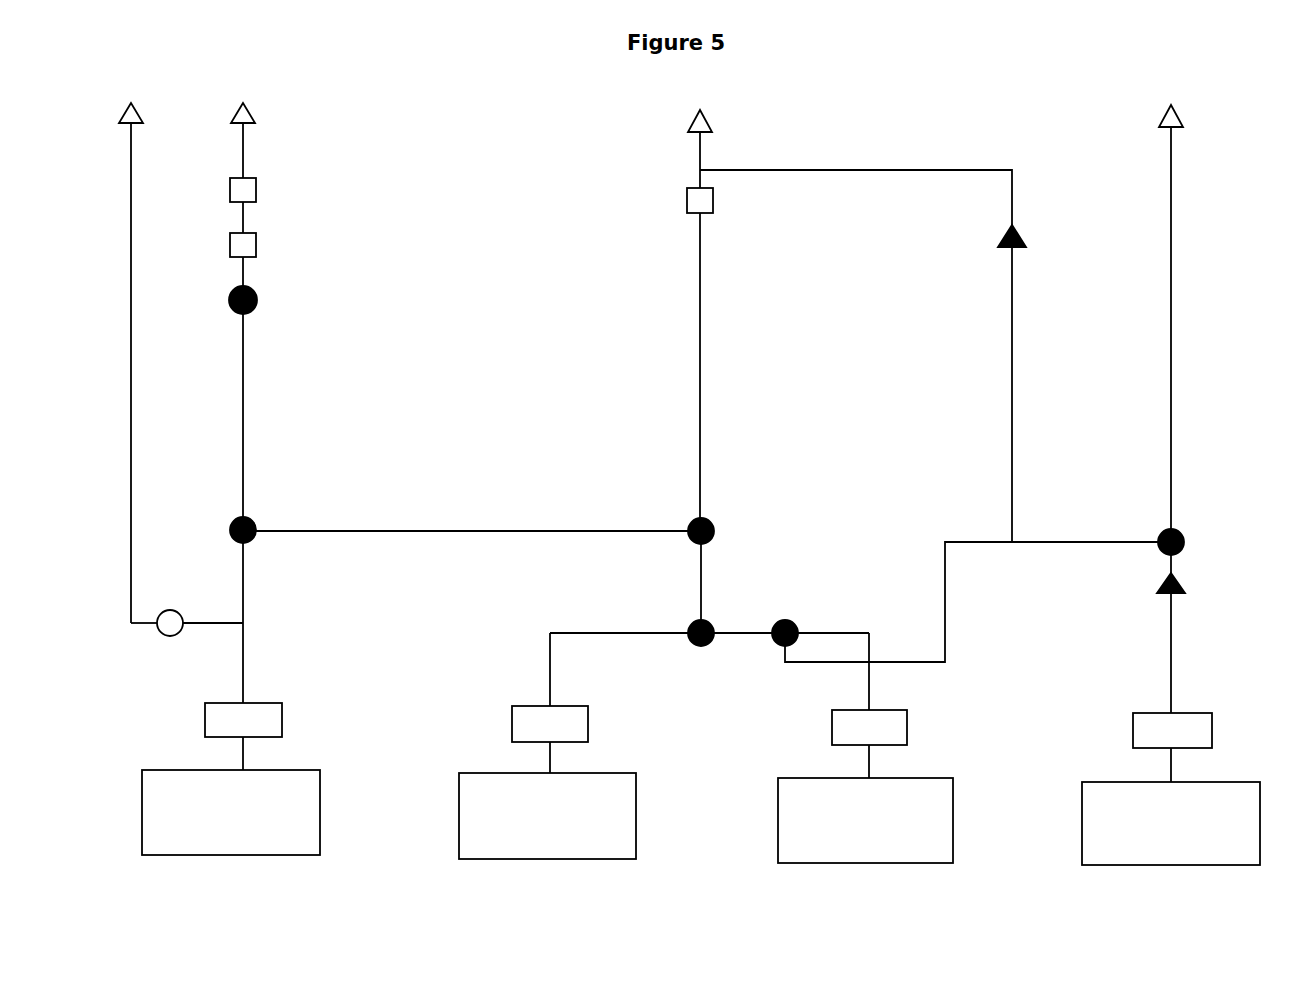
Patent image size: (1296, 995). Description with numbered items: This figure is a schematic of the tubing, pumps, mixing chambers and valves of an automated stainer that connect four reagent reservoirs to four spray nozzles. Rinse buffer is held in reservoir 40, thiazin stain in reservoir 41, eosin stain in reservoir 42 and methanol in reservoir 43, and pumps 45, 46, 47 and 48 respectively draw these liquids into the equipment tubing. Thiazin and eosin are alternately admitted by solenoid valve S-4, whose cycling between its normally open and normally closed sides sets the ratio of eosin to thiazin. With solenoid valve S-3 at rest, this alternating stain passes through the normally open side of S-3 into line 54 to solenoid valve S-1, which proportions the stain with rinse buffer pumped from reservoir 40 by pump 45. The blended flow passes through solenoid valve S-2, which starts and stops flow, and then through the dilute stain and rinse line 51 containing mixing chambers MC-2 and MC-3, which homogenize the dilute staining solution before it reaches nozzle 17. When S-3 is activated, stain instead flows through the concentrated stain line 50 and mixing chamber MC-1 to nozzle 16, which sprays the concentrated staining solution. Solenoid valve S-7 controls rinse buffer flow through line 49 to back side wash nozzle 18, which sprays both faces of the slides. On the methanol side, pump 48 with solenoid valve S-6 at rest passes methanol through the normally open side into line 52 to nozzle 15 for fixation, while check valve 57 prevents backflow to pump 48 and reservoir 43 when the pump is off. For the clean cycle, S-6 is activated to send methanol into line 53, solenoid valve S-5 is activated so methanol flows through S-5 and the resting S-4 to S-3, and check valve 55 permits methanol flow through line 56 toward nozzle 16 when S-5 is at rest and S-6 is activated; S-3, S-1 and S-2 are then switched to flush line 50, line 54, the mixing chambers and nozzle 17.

The methanol nozzle 15 is at (1170, 100).
The concentrated stain nozzle 16 is at (700, 105).
The dilute stain nozzle 17 is at (242, 97).
The back side wash nozzle 18 is at (130, 97).
The rinse buffer reservoir 40 is at (231, 796).
The thiazin stain reservoir 41 is at (547, 800).
The eosin stain reservoir 42 is at (865, 804).
The methanol reservoir 43 is at (1171, 806).
The rinse buffer pump 45 is at (268, 703).
The thiazin stain pump 46 is at (588, 718).
The eosin stain pump 47 is at (907, 728).
The methanol pump 48 is at (1212, 733).
The rinse buffer line 49 is at (131, 405).
The concentrated stain line 50 is at (700, 330).
The dilute stain and rinse line 51 is at (243, 397).
The methanol line 52 is at (1168, 392).
The methanol clean line 53 is at (945, 617).
The stain line 54 is at (490, 529).
The check valve 55 is at (1018, 232).
The methanol flow line 56 is at (1012, 340).
The check valve 57 is at (1185, 587).
The solenoid valve S-1 is at (245, 517).
The solenoid valve S-2 is at (257, 300).
The solenoid valve S-3 is at (714, 529).
The solenoid valve S-4 is at (701, 646).
The solenoid valve S-5 is at (784, 620).
The solenoid valve S-6 is at (1184, 540).
The solenoid valve S-7 is at (163, 611).
The mixing chamber MC-1 is at (713, 200).
The mixing chamber MC-2 is at (256, 190).
The mixing chamber MC-3 is at (256, 245).